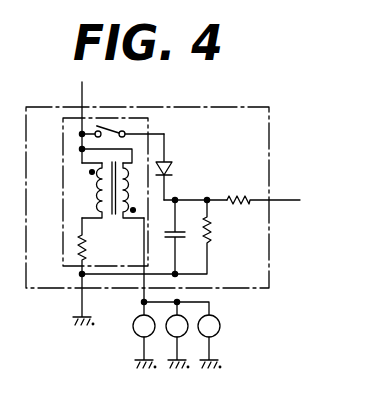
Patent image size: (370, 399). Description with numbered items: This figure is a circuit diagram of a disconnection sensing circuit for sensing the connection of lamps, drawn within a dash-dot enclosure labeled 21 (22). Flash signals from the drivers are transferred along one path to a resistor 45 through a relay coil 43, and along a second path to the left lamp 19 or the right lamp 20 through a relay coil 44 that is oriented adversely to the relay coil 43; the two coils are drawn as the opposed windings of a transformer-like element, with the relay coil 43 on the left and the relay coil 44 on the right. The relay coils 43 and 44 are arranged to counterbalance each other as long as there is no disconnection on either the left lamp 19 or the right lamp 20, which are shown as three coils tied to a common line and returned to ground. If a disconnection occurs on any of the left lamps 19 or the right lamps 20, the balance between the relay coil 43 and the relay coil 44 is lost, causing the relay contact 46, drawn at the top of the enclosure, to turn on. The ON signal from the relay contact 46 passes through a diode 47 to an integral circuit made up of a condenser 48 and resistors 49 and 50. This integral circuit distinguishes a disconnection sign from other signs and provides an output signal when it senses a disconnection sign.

The left lamp 19 is at (181, 293).
The right lamp 20 is at (134, 323).
The control circuit 21 is at (184, 197).
The control circuit 22 is at (270, 147).
The relay coil 43 is at (88, 199).
The relay coil 44 is at (126, 213).
The resistor 45 is at (79, 240).
The relay contact 46 is at (112, 125).
The diode 47 is at (168, 171).
The condenser 48 is at (183, 237).
The resistor 49 is at (212, 224).
The resistor 50 is at (247, 184).